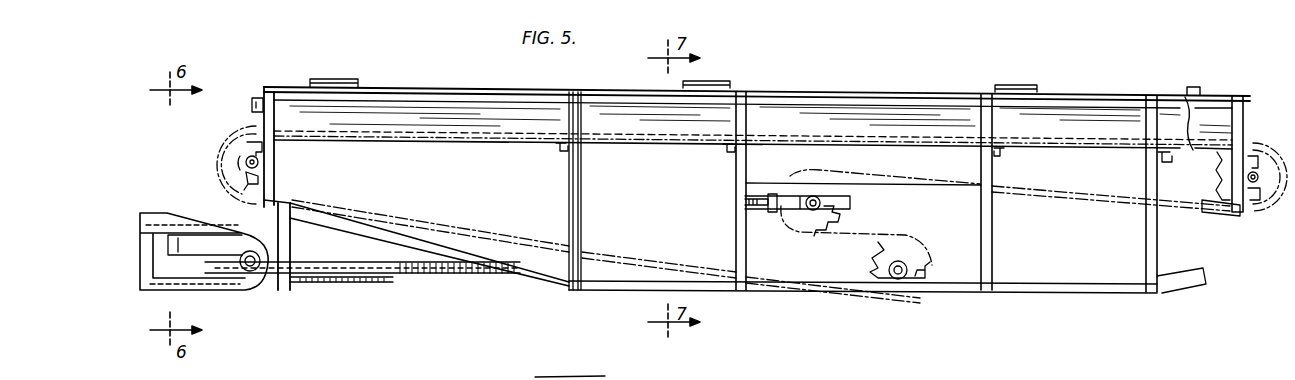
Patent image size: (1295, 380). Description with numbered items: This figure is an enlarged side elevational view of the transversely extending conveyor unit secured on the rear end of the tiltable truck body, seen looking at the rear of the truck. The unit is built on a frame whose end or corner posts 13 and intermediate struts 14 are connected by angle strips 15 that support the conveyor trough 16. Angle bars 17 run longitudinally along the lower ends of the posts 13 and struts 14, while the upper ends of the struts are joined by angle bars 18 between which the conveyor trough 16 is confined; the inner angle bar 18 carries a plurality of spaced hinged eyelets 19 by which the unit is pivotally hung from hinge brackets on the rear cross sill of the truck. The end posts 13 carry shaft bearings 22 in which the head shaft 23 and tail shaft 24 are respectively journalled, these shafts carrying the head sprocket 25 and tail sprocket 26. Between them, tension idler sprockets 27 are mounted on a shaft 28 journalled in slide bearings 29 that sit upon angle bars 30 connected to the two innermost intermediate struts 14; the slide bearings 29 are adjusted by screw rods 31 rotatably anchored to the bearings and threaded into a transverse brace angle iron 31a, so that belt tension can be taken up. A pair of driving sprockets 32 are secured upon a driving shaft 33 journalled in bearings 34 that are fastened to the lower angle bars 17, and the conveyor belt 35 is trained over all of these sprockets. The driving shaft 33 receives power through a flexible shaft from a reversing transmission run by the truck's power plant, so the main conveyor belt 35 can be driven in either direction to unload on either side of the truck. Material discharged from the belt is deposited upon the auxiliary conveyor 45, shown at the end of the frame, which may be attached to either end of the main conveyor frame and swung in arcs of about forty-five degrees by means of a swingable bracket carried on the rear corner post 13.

The end or corner post 13 is at (258, 107).
The intermediate strut 14 is at (582, 184).
The angle strip 15 is at (565, 147).
The conveyor trough 16 is at (848, 116).
The angle bar 17 is at (1045, 289).
The angle bar 18 is at (1078, 94).
The hinged eyelet 19 is at (345, 80).
The shaft bearing 22 is at (245, 178).
The head shaft 23 is at (1256, 183).
The tail shaft 24 is at (249, 159).
The head sprocket 25 is at (1262, 150).
The tail sprocket 26 is at (232, 162).
The tension idler sprocket 27 is at (837, 226).
The shaft 28 is at (811, 209).
The slide bearing 29 is at (850, 202).
The angle bar 30 is at (928, 188).
The screw rod 31 is at (762, 210).
The transverse brace angle iron 31a is at (742, 198).
The driving sprocket 32 is at (922, 256).
The driving shaft 33 is at (898, 279).
The bearing 34 is at (930, 260).
The conveyor belt 35 is at (514, 233).
The auxiliary conveyor 45 is at (204, 291).